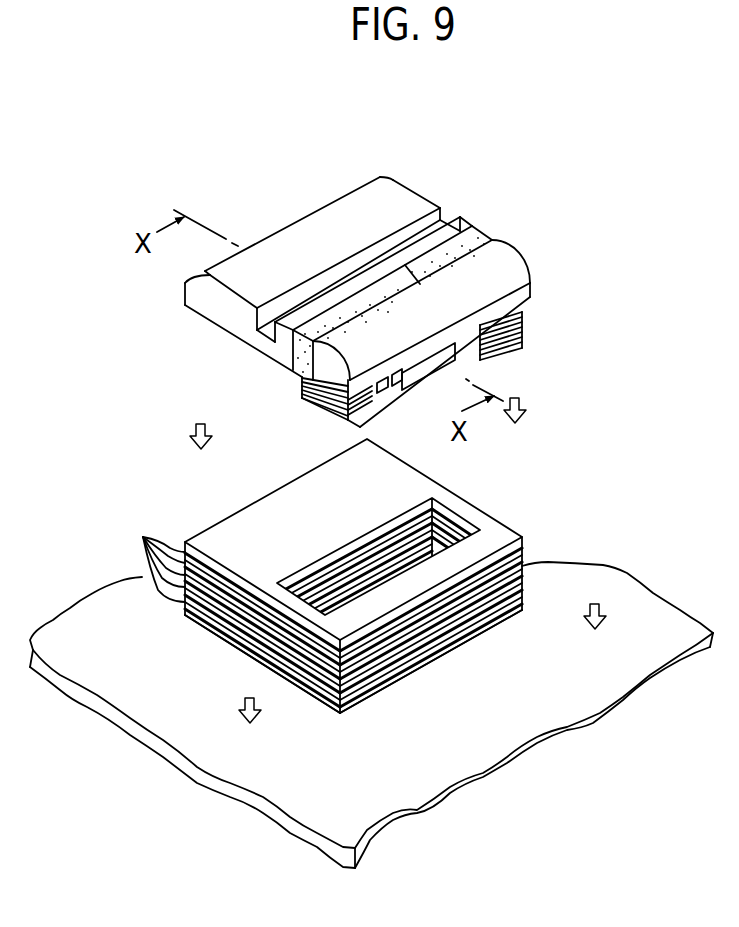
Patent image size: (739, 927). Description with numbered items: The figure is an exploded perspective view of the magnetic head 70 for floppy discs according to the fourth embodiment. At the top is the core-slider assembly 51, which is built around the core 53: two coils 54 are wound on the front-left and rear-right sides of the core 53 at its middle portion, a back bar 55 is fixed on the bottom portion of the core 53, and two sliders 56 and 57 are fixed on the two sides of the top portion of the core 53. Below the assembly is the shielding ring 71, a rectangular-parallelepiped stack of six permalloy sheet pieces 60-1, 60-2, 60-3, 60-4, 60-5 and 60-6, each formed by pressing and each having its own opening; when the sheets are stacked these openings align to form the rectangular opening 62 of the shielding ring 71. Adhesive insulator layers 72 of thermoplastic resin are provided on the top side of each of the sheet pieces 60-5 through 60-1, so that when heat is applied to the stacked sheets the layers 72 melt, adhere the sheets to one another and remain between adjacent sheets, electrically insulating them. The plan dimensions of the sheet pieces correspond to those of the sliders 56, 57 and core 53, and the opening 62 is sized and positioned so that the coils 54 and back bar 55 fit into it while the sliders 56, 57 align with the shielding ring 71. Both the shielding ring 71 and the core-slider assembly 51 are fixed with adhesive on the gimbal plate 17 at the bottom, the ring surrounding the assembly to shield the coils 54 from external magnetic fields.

The magnetic head 70 is at (583, 159).
The core-slider assembly 51 is at (514, 232).
The slider 57 is at (338, 199).
The core 53 is at (477, 243).
The slider 56 is at (512, 277).
The coil 54 is at (302, 385).
The back bar 55 is at (433, 395).
The shielding ring 71 is at (488, 500).
The opening 62 is at (413, 546).
The sheet piece 60-1 is at (516, 612).
The sheet piece 60-2 is at (519, 604).
The sheet piece 60-3 is at (527, 588).
The sheet piece 60-4 is at (522, 566).
The sheet piece 60-5 is at (522, 557).
The sheet piece 60-6 is at (522, 542).
The adhesive insulator layer 72 is at (142, 562).
The gimbal plate 17 is at (408, 802).